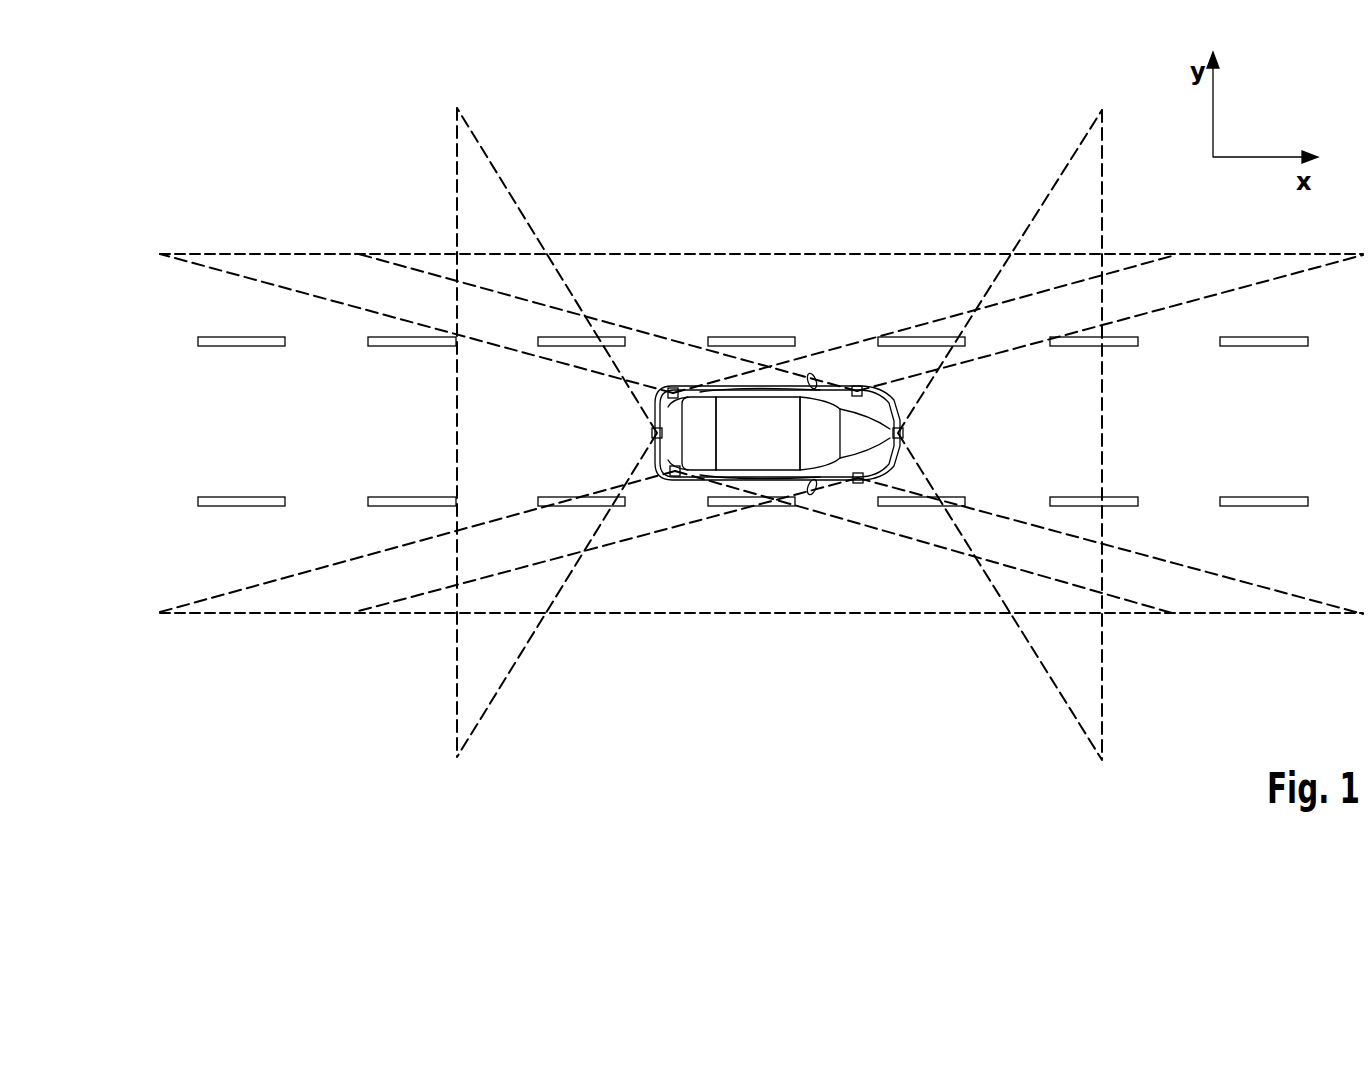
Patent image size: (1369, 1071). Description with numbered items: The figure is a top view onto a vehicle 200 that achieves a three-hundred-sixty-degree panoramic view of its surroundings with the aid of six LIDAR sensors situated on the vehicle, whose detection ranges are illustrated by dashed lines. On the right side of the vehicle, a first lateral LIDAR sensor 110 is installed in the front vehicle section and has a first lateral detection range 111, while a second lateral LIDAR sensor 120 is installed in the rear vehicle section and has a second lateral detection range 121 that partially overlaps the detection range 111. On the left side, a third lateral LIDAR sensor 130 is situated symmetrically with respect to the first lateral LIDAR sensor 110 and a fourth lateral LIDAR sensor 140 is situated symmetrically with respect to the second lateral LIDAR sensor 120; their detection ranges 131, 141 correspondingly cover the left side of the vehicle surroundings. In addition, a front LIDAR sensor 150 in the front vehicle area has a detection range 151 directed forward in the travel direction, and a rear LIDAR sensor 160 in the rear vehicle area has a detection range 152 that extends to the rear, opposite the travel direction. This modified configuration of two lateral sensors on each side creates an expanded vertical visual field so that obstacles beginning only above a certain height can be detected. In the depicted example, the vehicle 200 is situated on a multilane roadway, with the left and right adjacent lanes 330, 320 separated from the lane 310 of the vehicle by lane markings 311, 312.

The first lateral LIDAR sensor 110 is at (858, 483).
The first lateral detection range 111 is at (1274, 589).
The second lateral LIDAR sensor 120 is at (675, 476).
The second lateral detection range 121 is at (248, 585).
The third lateral LIDAR sensor 130 is at (857, 386).
The detection range of third lateral LIDAR sensor 131 is at (1174, 307).
The fourth lateral LIDAR sensor 140 is at (673, 388).
The detection range of fourth lateral LIDAR sensor 141 is at (328, 302).
The front LIDAR sensor 150 is at (903, 433).
The detection range of front LIDAR sensor 151 is at (1049, 686).
The detection range of sensor 160 152 is at (510, 688).
The rear LIDAR sensor 160 is at (652, 433).
The vehicle 200 is at (757, 415).
The lane 310 is at (245, 414).
The lane marking 311 is at (397, 348).
The lane marking 312 is at (415, 497).
The right adjacent lane 320 is at (215, 549).
The left adjacent lane 330 is at (215, 295).